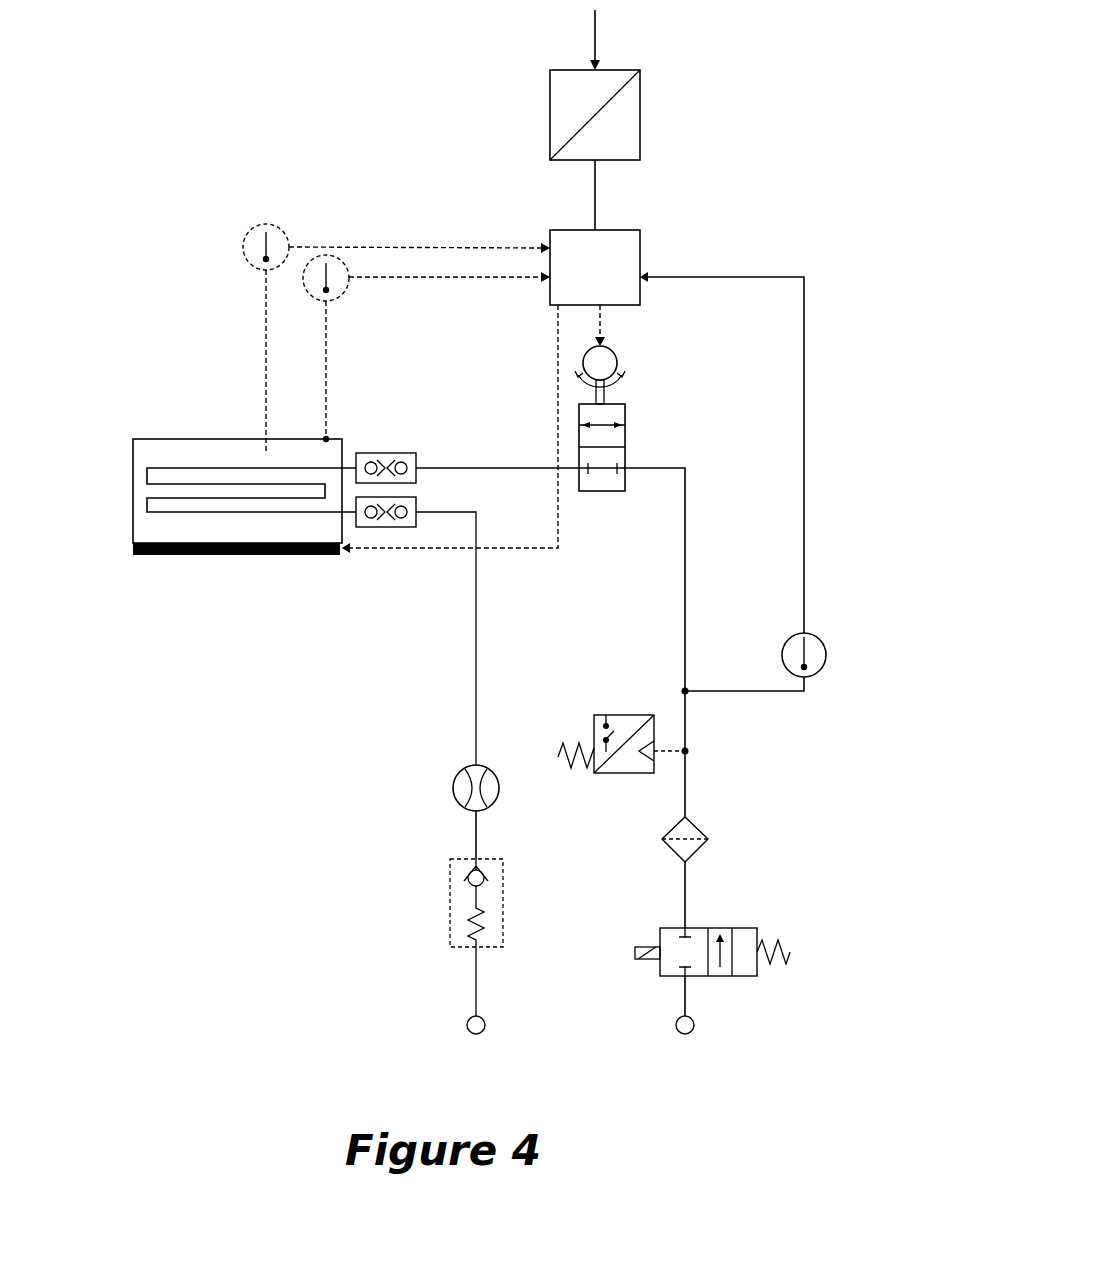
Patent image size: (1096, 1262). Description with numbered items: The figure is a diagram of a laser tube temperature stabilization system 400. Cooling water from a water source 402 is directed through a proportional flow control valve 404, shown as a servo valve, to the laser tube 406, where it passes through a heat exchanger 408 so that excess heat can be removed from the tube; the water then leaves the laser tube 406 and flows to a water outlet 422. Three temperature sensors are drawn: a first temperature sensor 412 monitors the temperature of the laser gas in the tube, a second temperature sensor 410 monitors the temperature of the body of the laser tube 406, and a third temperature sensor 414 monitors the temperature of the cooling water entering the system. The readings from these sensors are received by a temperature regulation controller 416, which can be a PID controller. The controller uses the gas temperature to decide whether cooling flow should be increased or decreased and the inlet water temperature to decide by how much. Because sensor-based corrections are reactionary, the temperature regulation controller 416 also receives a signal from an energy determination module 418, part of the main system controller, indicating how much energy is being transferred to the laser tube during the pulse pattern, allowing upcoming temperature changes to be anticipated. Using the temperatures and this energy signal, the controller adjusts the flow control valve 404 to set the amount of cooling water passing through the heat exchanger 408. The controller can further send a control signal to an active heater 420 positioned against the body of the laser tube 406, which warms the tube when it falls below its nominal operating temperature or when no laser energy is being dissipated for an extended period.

The laser tube temperature stabilization system 400 is at (152, 91).
The water source 402 is at (695, 1033).
The proportional flow control valve 404 is at (622, 423).
The laser tube 406 is at (133, 495).
The heat exchanger 408 is at (175, 468).
The second temperature sensor 410 is at (332, 298).
The first temperature sensor 412 is at (270, 226).
The third temperature sensor 414 is at (827, 640).
The temperature regulation controller 416 is at (640, 253).
The energy determination module 418 is at (640, 113).
The active heater 420 is at (230, 547).
The water outlet 422 is at (484, 1034).